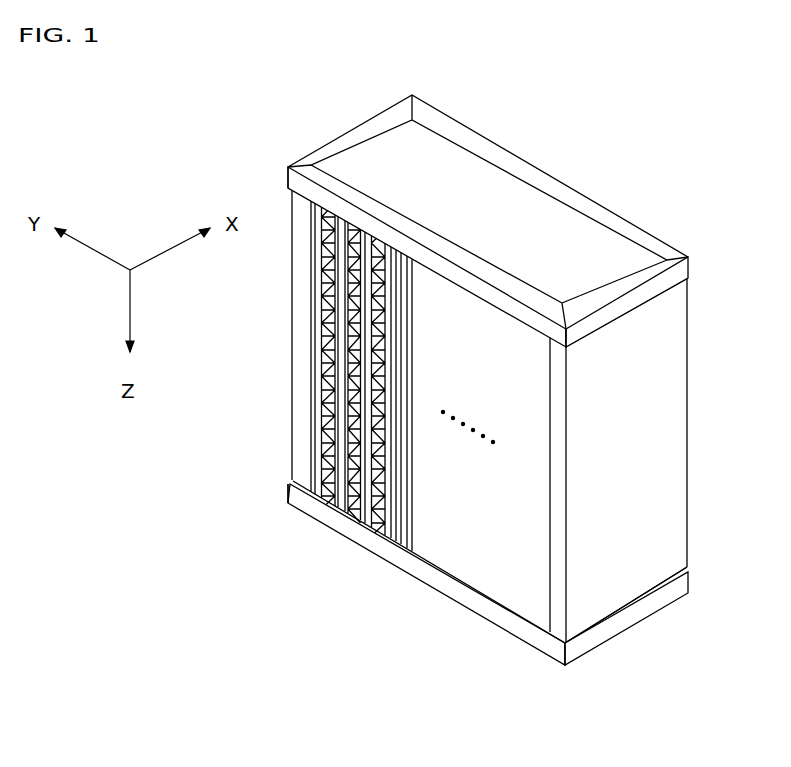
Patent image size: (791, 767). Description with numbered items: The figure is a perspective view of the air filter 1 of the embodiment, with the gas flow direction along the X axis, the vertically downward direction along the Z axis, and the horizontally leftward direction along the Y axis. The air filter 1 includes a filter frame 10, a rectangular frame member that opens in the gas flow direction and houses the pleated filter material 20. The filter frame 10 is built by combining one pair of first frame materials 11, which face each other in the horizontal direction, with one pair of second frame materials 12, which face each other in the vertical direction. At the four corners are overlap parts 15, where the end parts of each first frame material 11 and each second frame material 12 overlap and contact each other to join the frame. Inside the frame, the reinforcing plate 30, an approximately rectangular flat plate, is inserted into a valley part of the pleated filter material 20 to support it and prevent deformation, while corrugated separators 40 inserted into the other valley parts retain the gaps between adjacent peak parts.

The air filter 1 is at (498, 394).
The filter frame 10 is at (612, 203).
The first frame material 11 is at (664, 416).
The second frame material 12 is at (612, 258).
The overlap part 15 is at (292, 200).
The pleated filter material 20 is at (313, 488).
The reinforcing plate 30 is at (402, 537).
The separator 40 is at (362, 506).